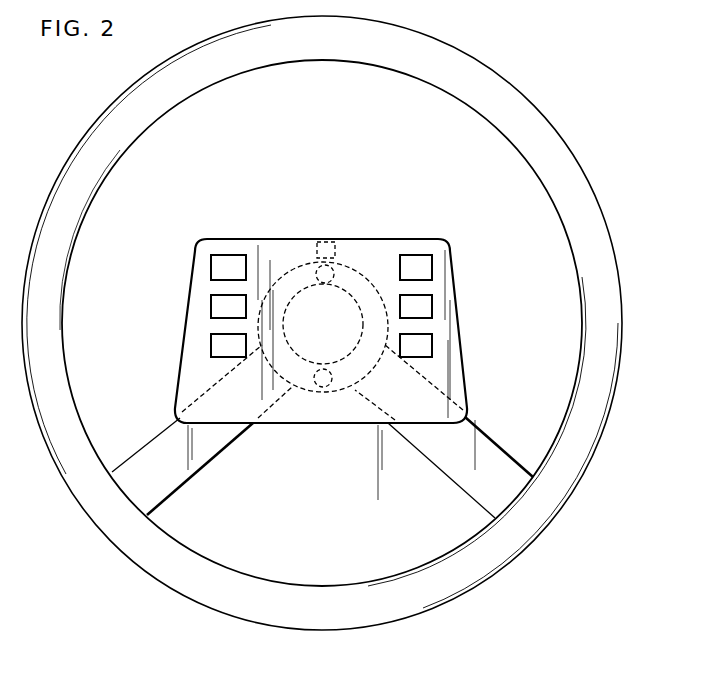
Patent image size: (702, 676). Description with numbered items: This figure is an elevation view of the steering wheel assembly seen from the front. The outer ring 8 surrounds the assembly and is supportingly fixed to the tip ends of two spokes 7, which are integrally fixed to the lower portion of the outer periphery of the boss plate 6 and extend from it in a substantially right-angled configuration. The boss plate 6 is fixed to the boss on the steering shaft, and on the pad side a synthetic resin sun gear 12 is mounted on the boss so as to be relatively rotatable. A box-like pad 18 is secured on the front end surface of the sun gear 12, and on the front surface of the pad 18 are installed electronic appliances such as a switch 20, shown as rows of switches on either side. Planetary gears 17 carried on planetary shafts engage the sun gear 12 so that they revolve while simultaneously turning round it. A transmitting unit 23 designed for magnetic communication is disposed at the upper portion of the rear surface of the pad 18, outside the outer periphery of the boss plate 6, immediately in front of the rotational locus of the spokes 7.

The ring 8 is at (540, 113).
The spokes 7 is at (200, 462).
The box-like pad 18 is at (362, 240).
The switch 20 is at (211, 268).
The boss plate 6 is at (388, 290).
The sun gear 12 is at (287, 358).
The planetary gear 17 is at (315, 268).
The transmitting unit 23 is at (317, 243).